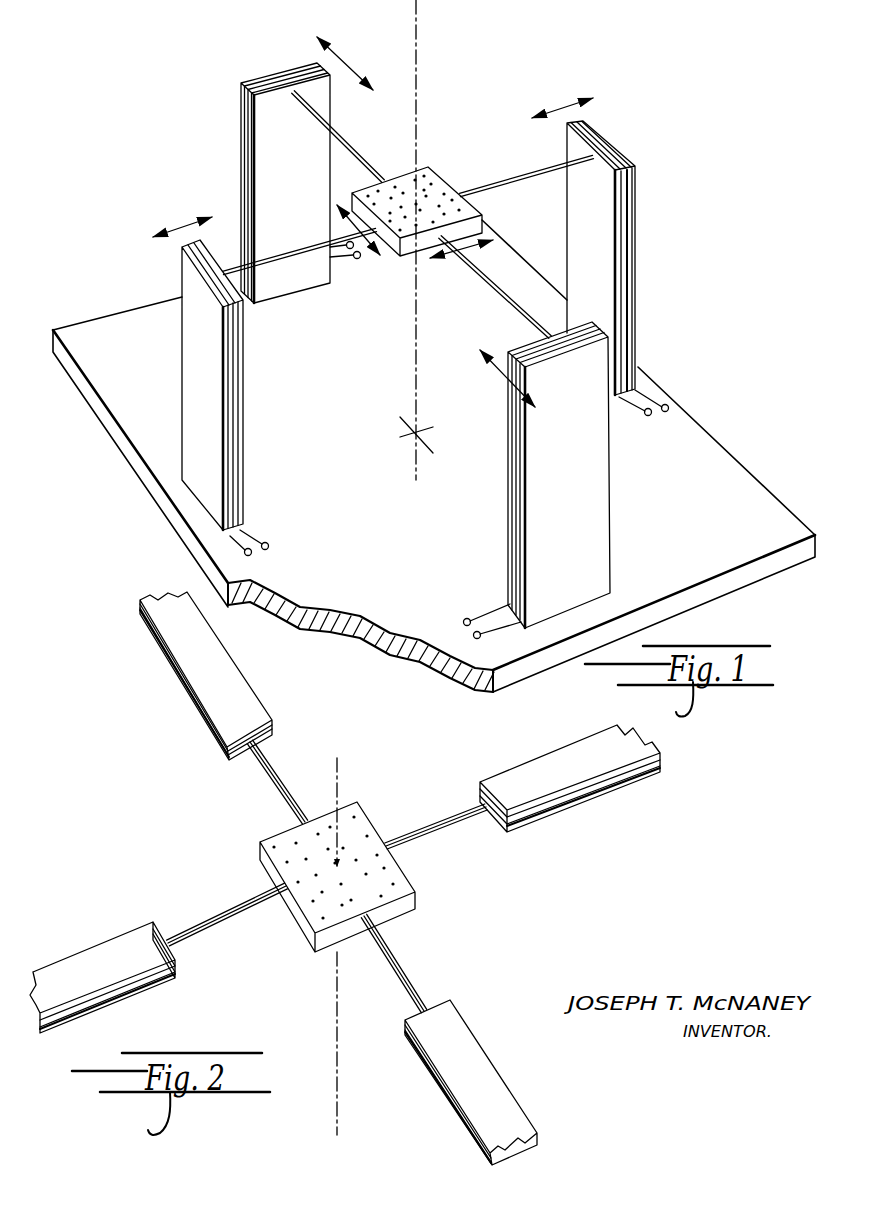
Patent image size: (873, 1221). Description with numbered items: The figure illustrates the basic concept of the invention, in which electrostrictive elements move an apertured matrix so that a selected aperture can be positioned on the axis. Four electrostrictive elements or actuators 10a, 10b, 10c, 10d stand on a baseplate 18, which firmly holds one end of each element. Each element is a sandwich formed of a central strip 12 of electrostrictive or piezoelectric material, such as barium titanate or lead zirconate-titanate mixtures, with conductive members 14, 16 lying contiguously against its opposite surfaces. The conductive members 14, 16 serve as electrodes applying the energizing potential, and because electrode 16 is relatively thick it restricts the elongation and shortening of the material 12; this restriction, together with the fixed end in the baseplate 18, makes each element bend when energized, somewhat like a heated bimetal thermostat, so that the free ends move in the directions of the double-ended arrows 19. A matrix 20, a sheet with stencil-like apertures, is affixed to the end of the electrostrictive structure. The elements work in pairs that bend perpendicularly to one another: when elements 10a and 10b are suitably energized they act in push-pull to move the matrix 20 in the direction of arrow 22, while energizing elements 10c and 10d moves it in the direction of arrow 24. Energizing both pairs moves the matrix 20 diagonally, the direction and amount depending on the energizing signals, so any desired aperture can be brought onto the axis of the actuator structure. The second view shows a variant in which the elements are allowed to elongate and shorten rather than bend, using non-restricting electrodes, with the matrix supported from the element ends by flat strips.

In FIG. 1, the electrostrictive element 10a is at (180, 362).
In FIG. 1, the electrostrictive element 10b is at (712, 273).
In FIG. 1, the electrostrictive element 10c is at (304, 62).
In FIG. 1, the electrostrictive element 10d is at (506, 544).
In FIG. 1, the central strip 12 is at (247, 101).
In FIG. 1, the conductive member 14 is at (251, 117).
In FIG. 1, the conductive member 16 is at (240, 84).
In FIG. 1, the baseplate 18 is at (148, 492).
In FIG. 1, the double-ended arrows 19 is at (345, 63).
In FIG. 1, the matrix 20 is at (413, 205).
In FIG. 2, the matrix 20 is at (362, 826).
In FIG. 1, the arrow 22 is at (452, 258).
In FIG. 1, the arrow 24 is at (357, 259).